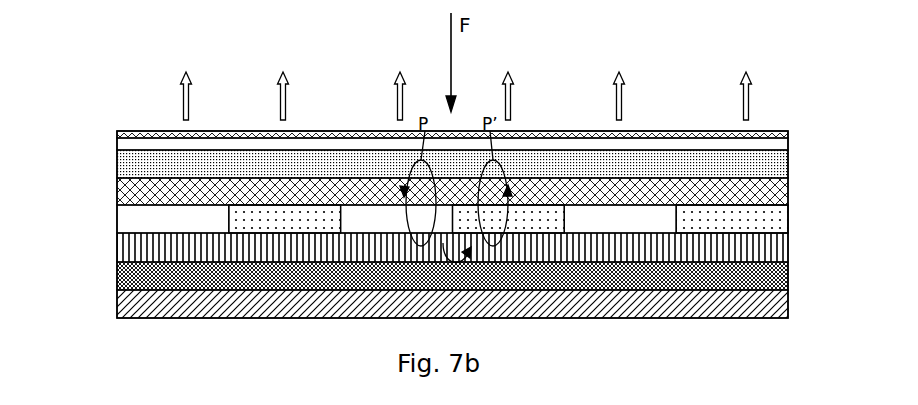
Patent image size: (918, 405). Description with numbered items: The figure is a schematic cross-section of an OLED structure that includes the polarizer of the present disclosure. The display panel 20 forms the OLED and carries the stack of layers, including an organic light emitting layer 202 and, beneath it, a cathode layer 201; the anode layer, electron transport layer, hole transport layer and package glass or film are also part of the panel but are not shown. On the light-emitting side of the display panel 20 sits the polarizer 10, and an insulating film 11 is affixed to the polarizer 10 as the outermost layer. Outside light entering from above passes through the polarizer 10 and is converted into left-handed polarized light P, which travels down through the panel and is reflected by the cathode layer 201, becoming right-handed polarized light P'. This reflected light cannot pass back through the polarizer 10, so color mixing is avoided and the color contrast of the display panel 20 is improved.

The polarizer 10 is at (773, 140).
The insulating film 11 is at (118, 134).
The display panel 20 is at (437, 224).
The cathode layer 201 is at (127, 280).
The organic light emitting layer 202 is at (127, 221).